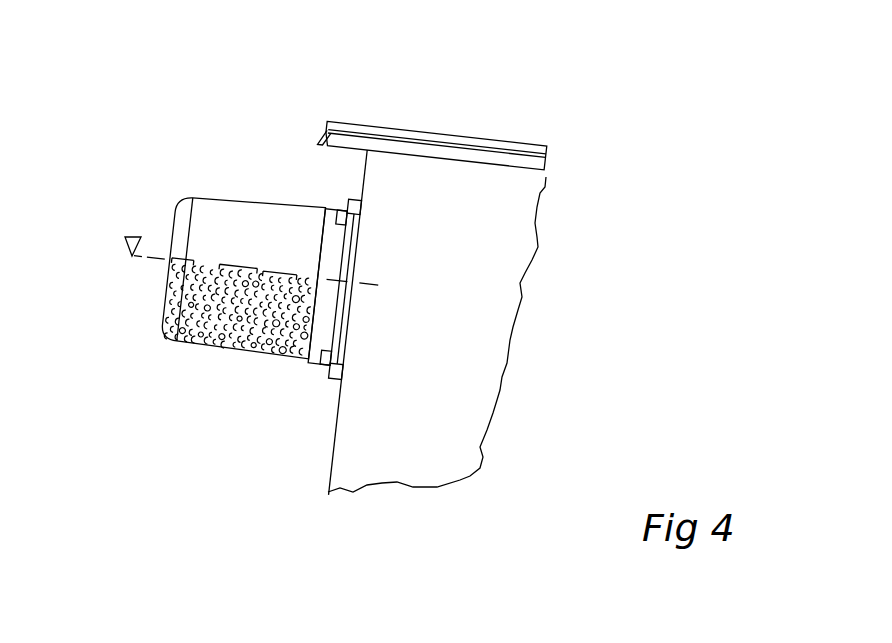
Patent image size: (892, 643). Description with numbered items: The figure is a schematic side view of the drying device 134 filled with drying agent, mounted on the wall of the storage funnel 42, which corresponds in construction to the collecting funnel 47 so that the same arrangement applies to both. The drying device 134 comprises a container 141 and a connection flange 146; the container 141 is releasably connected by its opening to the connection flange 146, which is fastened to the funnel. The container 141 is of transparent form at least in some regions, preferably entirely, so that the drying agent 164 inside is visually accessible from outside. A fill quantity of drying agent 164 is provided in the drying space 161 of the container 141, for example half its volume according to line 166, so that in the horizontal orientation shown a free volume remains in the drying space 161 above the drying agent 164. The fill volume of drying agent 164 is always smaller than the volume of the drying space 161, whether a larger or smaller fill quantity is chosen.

The storage funnel 42 is at (504, 318).
The collecting funnel 47 is at (601, 247).
The drying device 134 is at (109, 352).
The container 141 is at (255, 243).
The connection flange 146 is at (343, 188).
The drying space 161 is at (215, 236).
The drying agent 164 is at (207, 345).
The line 166 is at (126, 237).